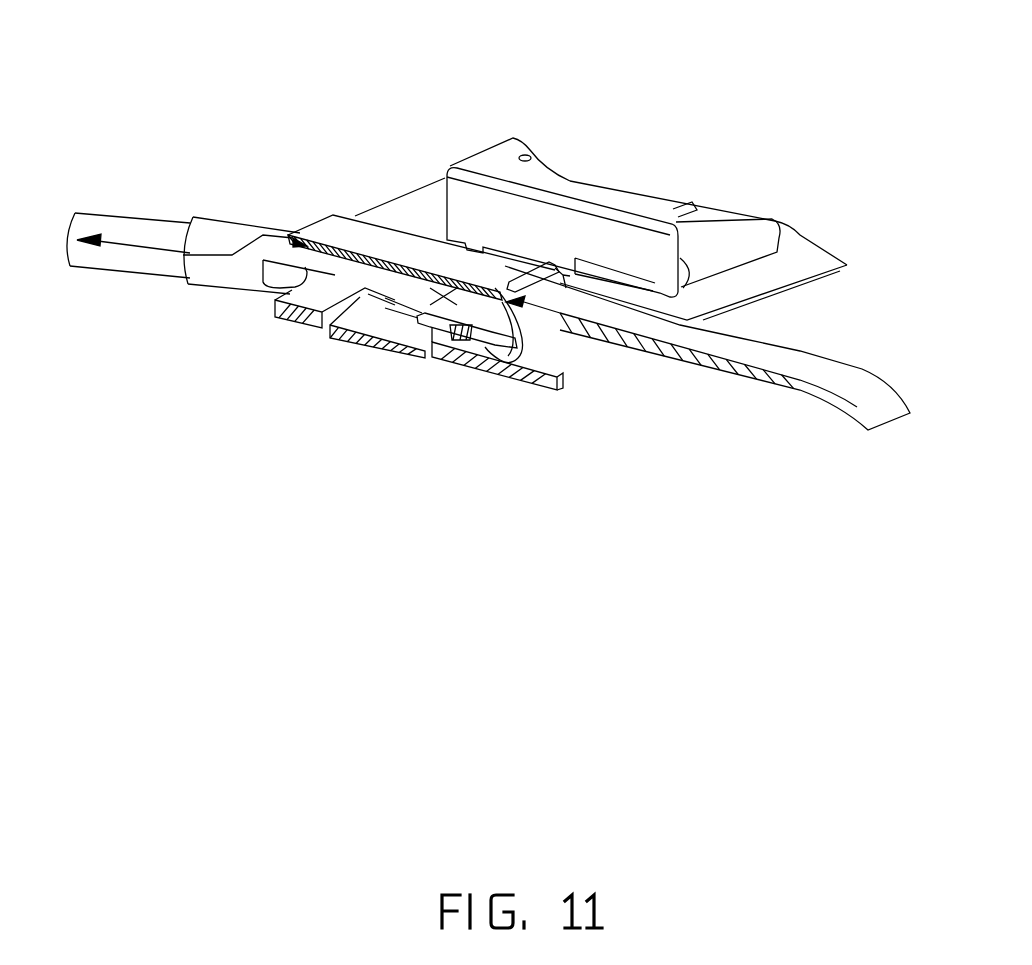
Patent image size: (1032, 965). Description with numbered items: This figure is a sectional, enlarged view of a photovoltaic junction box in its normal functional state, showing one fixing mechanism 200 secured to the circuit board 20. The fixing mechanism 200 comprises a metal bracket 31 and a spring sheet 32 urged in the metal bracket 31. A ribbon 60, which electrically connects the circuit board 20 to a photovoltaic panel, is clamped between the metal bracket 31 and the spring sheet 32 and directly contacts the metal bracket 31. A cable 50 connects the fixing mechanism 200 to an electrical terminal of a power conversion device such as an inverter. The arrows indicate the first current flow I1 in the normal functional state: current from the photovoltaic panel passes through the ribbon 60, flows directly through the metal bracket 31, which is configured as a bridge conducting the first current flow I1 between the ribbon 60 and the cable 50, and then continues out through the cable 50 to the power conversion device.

The cable 50 is at (155, 227).
The fixing mechanism 200 is at (508, 158).
The circuit board 20 is at (772, 288).
The metal bracket 31 is at (597, 333).
The spring sheet 32 is at (543, 342).
The ribbon 60 is at (847, 390).
The first current flow I1 is at (118, 247).